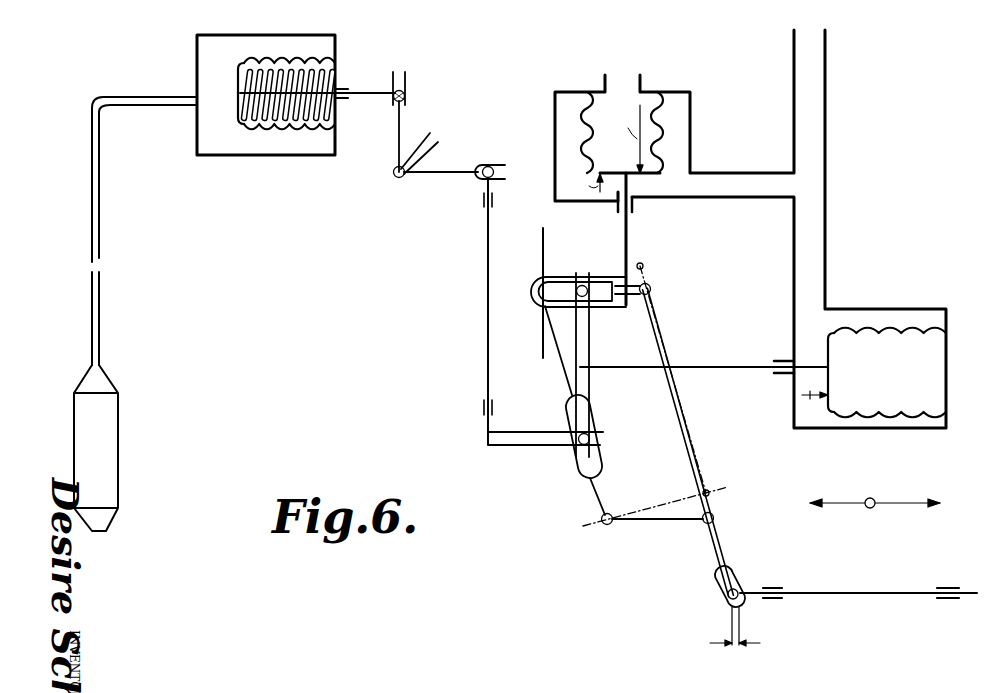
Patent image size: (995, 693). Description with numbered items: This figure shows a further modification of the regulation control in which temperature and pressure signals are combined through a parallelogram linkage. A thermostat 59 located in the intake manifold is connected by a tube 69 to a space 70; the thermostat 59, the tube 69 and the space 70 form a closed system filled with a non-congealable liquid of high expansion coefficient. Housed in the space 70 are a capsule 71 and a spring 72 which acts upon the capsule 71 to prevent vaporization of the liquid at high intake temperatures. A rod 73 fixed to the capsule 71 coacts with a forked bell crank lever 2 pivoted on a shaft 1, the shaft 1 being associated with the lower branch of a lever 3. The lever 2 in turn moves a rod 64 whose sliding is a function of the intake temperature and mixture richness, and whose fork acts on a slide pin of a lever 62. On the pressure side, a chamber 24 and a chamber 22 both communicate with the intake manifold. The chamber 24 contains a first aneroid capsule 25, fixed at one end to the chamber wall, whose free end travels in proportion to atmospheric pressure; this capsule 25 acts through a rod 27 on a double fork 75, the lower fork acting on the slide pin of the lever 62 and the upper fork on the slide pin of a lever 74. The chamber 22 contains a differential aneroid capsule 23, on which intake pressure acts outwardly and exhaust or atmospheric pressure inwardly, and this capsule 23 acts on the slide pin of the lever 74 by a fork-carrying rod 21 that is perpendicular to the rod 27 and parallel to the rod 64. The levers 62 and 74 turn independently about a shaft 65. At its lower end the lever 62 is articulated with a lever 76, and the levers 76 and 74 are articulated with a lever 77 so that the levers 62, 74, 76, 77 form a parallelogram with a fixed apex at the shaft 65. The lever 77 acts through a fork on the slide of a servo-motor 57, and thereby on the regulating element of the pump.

The shaft 1 is at (400, 180).
The forked bell crank lever 2 is at (403, 122).
The lever 3 is at (433, 141).
The rod 21 is at (624, 232).
The space 22 is at (677, 108).
The aneroid capsule 23 is at (582, 100).
The space 24 is at (862, 316).
The aneroid capsule 25 is at (922, 383).
The rod 27 is at (736, 364).
The servo-motor 57 is at (885, 593).
The thermostat 59 is at (110, 458).
The lever 62 is at (597, 490).
The rod 64 is at (488, 372).
The shaft 65 is at (637, 267).
The tube 69 is at (88, 198).
The space 70 is at (223, 148).
The capsule 71 is at (312, 130).
The spring 72 is at (262, 122).
The rod 73 is at (365, 92).
The lever 74 is at (567, 278).
The double fork 75 is at (583, 371).
The lever 76 is at (650, 525).
The lever 77 is at (723, 541).